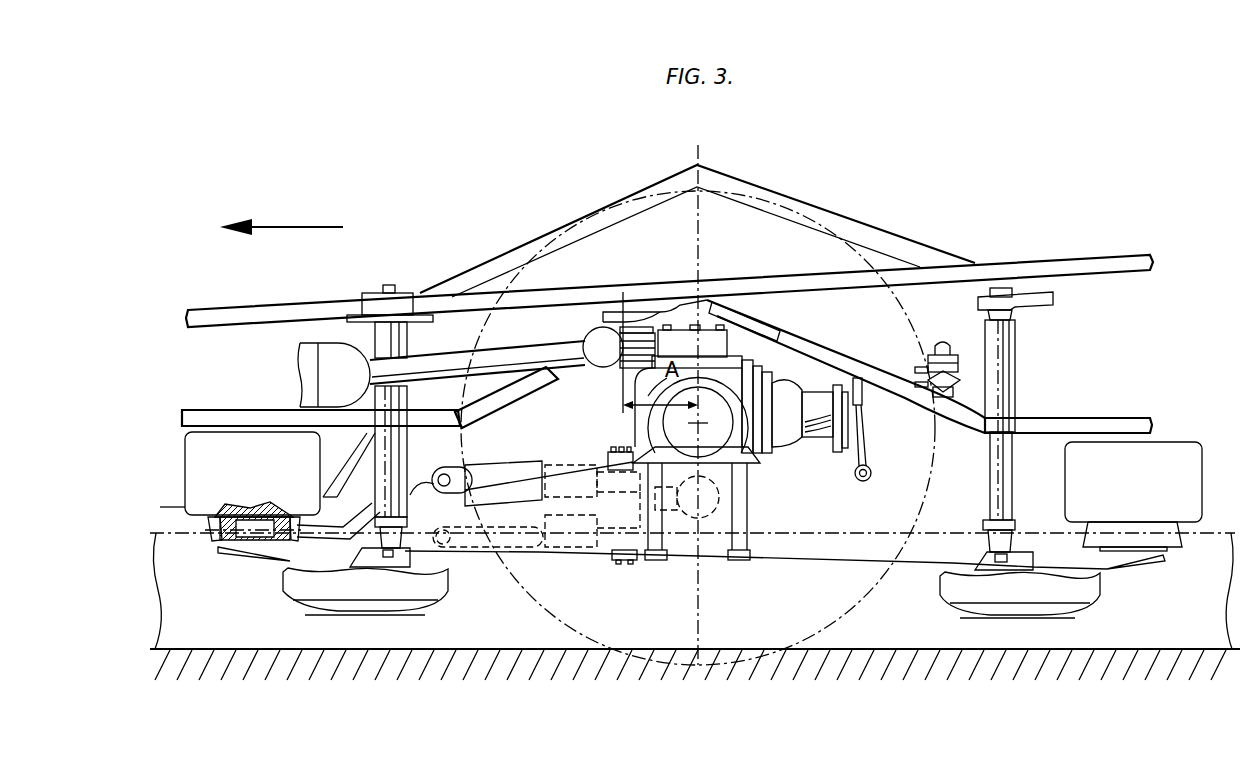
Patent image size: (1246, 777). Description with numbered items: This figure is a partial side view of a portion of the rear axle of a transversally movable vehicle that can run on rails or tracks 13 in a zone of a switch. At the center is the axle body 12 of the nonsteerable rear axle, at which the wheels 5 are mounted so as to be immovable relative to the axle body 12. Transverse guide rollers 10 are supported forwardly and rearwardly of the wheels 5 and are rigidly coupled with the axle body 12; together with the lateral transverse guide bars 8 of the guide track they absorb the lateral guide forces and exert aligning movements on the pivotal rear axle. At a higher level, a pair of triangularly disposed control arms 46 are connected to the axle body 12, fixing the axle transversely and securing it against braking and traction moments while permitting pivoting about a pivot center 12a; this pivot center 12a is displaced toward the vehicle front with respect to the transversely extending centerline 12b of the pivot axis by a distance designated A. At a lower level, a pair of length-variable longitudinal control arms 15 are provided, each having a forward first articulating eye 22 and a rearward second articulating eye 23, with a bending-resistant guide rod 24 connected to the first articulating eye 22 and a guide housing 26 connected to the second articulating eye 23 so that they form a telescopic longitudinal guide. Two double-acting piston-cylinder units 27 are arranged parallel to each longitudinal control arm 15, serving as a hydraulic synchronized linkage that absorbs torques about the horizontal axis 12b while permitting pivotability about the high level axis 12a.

The wheels 5 is at (862, 597).
The transverse guide bars 8 is at (176, 534).
The guide rollers 10 is at (443, 588).
The axle body 12 is at (713, 443).
The pivot center 12a is at (622, 397).
The transversely extending centerline 12b is at (702, 420).
The rails or tracks 13 is at (225, 648).
The longitudinal control arms 15 is at (500, 456).
The first articulating eye 22 is at (413, 484).
The second articulating eye 23 is at (702, 520).
The guide rod 24 is at (504, 556).
The guide housing 26 is at (607, 466).
The piston-cylinder units 27 is at (544, 462).
The triangularly disposed control arms 46 is at (441, 362).